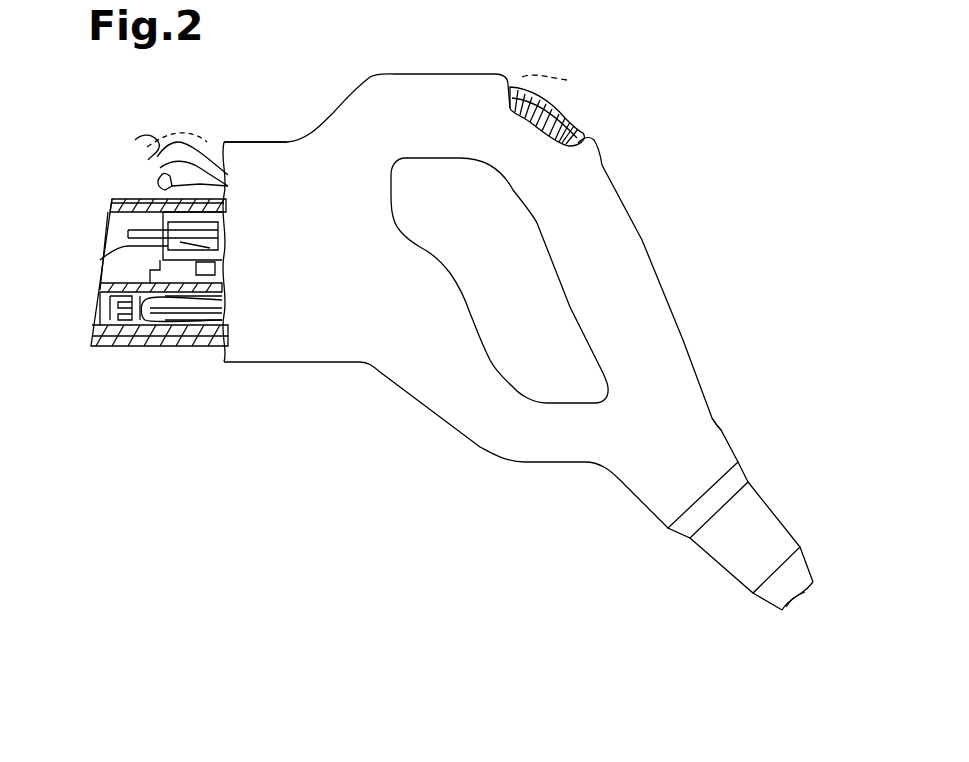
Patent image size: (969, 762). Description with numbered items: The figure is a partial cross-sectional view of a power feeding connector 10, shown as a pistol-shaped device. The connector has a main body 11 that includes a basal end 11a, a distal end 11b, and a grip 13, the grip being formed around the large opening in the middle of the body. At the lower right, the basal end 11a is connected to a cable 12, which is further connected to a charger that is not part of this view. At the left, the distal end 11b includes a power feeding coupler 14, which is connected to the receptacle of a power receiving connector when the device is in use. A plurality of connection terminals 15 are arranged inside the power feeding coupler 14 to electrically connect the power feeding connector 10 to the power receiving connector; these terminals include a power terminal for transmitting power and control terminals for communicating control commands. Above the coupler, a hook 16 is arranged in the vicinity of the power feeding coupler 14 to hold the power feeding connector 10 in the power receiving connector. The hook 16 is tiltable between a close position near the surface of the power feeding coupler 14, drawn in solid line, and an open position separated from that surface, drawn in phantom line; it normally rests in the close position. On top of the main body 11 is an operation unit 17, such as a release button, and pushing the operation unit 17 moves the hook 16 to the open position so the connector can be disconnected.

The power feeding connector 10 is at (690, 132).
The main body 11 is at (637, 236).
The basal end 11a is at (723, 427).
The distal end 11b is at (240, 142).
The cable 12 is at (809, 560).
The grip 13 is at (563, 296).
The power feeding coupler 14 is at (124, 198).
The connection terminals 15 is at (100, 262).
The hook 16 is at (146, 142).
The operation unit 17 is at (565, 103).